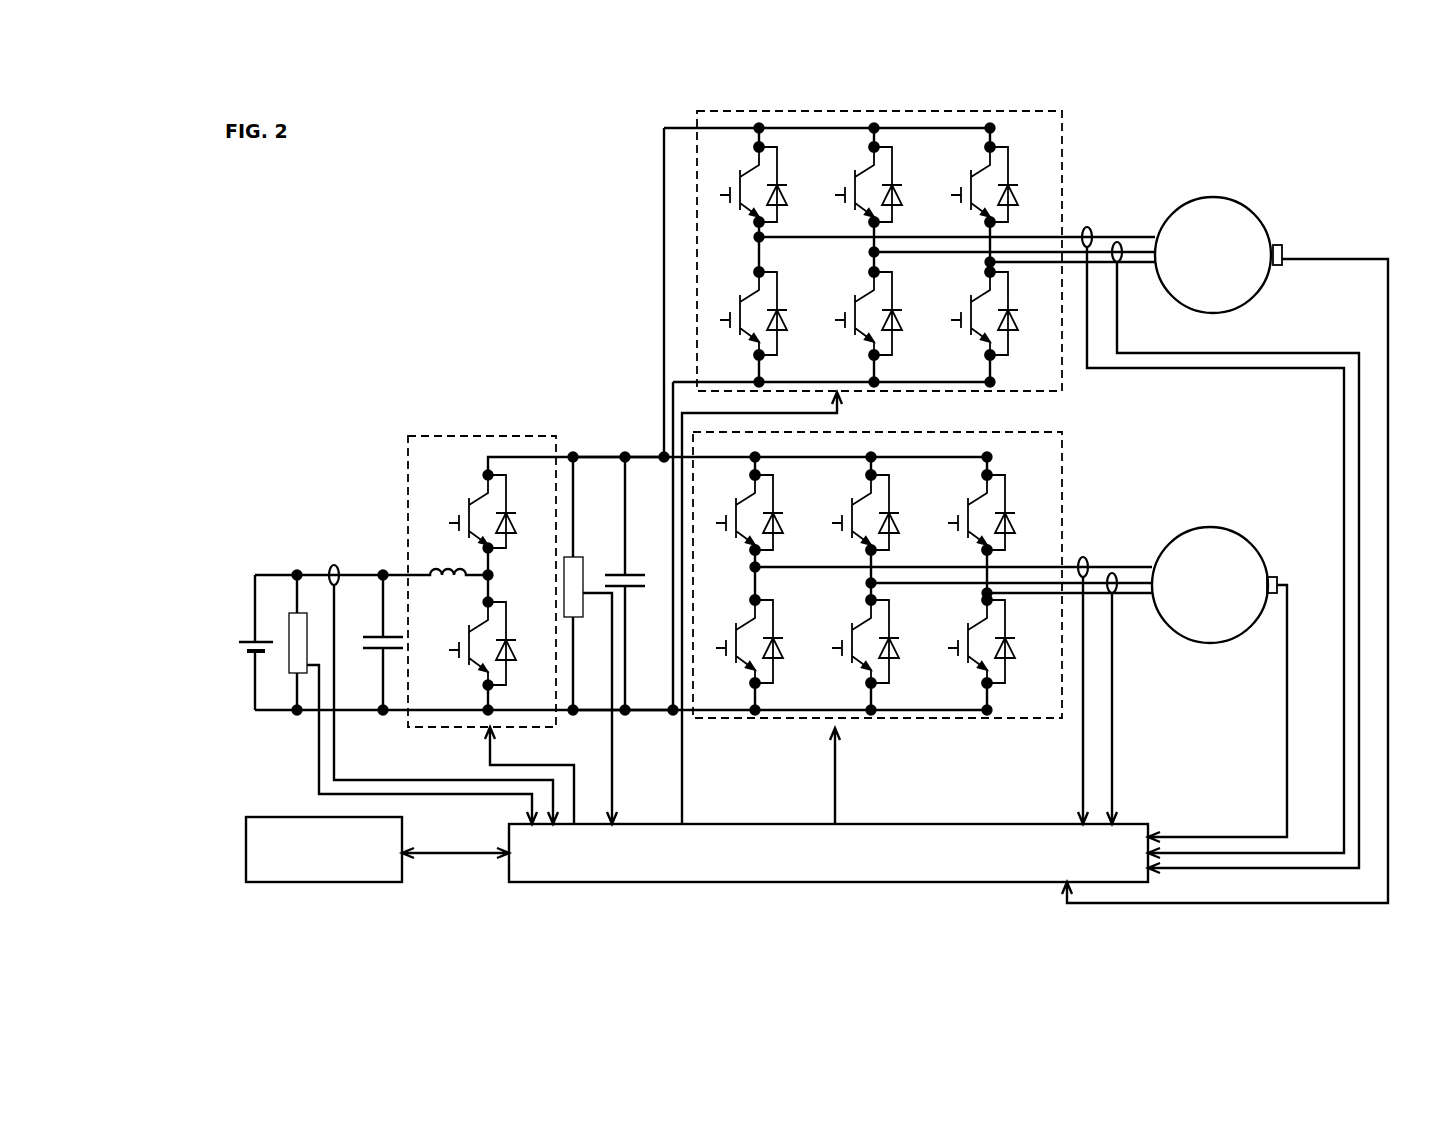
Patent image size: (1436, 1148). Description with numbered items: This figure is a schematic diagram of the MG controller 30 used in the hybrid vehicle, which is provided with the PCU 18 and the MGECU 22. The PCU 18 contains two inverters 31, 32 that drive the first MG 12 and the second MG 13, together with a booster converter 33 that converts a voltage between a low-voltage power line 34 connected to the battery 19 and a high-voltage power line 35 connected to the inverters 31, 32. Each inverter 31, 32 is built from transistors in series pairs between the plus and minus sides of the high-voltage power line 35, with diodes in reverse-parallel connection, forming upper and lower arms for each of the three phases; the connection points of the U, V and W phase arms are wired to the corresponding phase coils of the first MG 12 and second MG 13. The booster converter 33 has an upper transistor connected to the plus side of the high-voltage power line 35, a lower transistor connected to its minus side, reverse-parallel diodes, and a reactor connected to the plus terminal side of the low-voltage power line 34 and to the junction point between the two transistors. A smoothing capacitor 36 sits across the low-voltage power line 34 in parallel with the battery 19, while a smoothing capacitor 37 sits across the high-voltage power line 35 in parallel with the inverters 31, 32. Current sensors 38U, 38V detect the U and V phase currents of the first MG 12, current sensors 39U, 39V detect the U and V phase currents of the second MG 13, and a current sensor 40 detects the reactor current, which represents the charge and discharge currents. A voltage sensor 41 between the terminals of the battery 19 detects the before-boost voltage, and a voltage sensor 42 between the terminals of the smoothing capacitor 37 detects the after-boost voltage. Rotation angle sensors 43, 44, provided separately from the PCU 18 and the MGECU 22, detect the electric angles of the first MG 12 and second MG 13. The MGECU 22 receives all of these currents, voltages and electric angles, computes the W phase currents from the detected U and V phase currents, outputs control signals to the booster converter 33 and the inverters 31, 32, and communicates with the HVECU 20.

The first MG 12 is at (1256, 209).
The second MG 13 is at (1251, 538).
The PCU 18 is at (332, 417).
The battery 19 is at (247, 642).
The HVECU 20 is at (247, 821).
The MGECU 22 is at (926, 884).
The MG controller 30 is at (1153, 128).
The inverter 31 is at (1065, 140).
The inverter 32 is at (1065, 480).
The booster converter 33 is at (489, 433).
The low-voltage power line 34 is at (354, 705).
The high-voltage power line 35 is at (652, 708).
The smoothing capacitor 36 is at (398, 650).
The smoothing capacitor 37 is at (616, 574).
The current sensor 38U is at (1089, 226).
The current sensor 38V is at (1120, 241).
The current sensor 39U is at (1085, 556).
The current sensor 39V is at (1115, 572).
The current sensor 40 is at (333, 565).
The voltage sensor 41 is at (290, 611).
The voltage sensor 42 is at (583, 654).
The rotation angle sensor 43 is at (1285, 248).
The rotation angle sensor 44 is at (1280, 578).